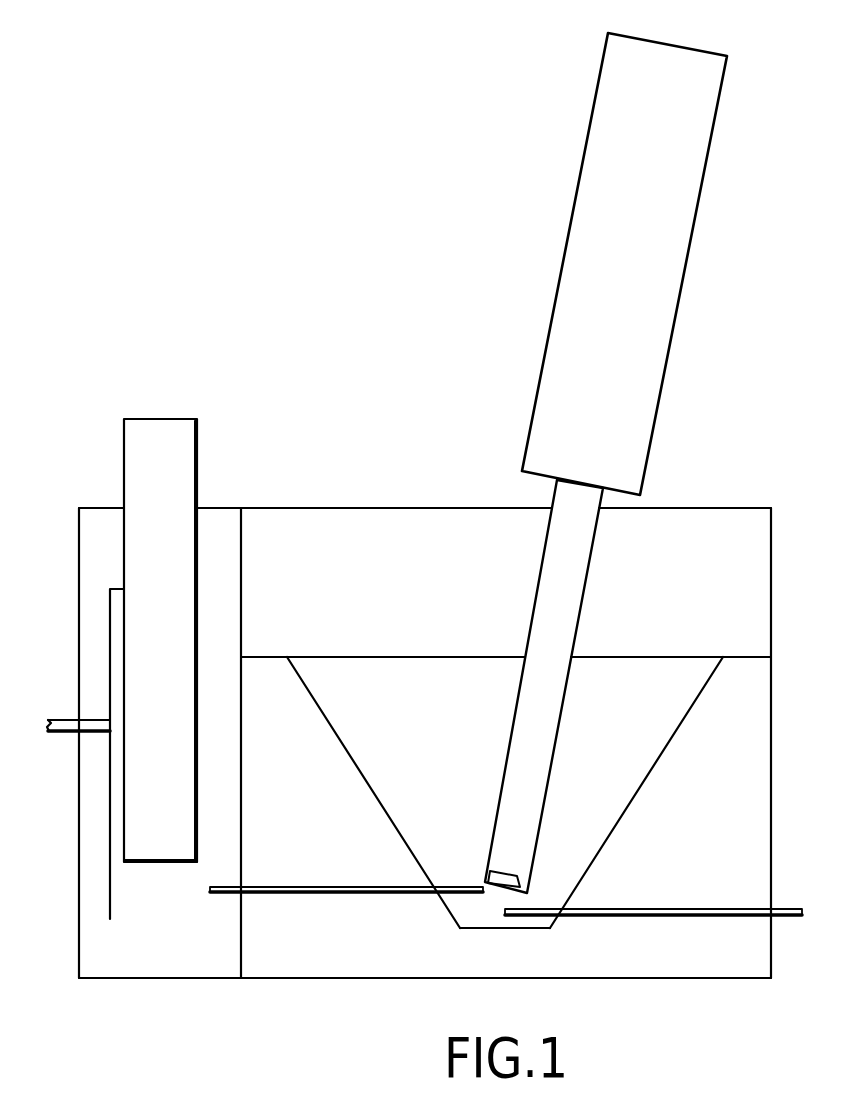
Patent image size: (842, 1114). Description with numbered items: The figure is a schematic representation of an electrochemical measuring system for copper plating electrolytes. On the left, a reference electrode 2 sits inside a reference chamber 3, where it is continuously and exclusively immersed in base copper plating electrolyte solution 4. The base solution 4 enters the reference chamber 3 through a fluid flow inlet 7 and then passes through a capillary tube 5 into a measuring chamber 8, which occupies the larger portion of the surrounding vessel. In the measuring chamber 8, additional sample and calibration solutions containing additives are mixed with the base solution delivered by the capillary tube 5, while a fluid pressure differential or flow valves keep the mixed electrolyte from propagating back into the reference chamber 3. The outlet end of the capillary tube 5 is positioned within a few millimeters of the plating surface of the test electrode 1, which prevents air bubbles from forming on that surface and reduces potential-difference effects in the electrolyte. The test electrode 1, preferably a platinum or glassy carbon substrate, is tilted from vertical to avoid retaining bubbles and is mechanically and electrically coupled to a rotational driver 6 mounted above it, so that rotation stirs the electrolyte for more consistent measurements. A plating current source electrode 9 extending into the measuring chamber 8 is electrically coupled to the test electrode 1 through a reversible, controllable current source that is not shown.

The test electrode 1 is at (507, 742).
The reference electrode 2 is at (130, 827).
The reference chamber 3 is at (87, 947).
The base copper plating electrolyte solution 4 is at (118, 885).
The capillary tube 5 is at (385, 886).
The rotational driver 6 is at (557, 284).
The fluid flow inlet 7 is at (70, 718).
The measuring chamber 8 is at (675, 679).
The plating current source electrode 9 is at (712, 908).